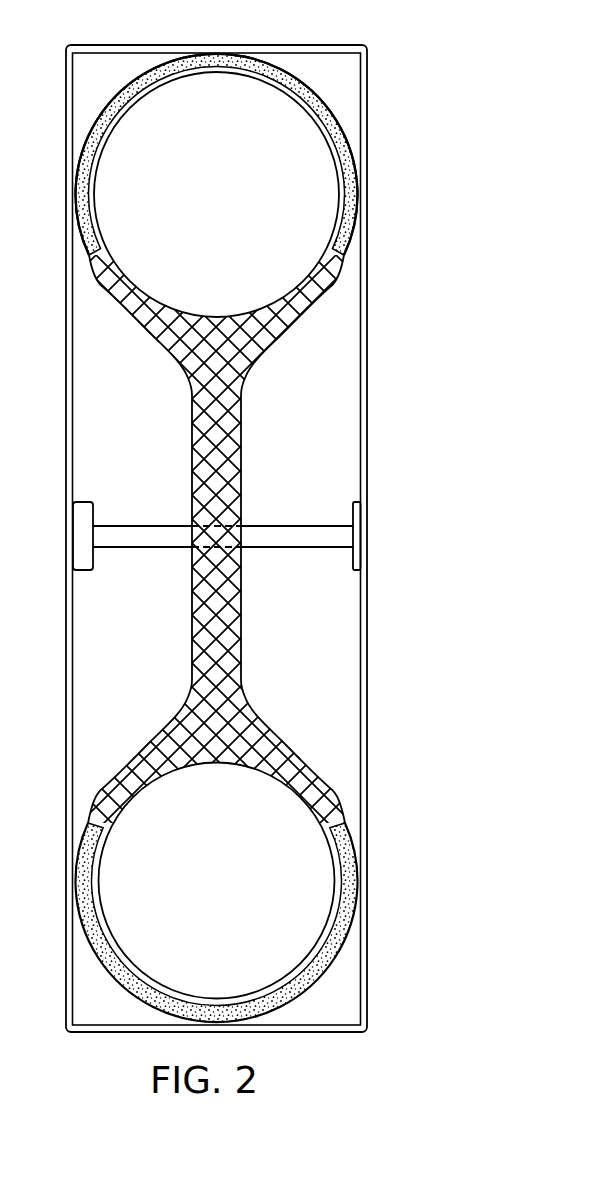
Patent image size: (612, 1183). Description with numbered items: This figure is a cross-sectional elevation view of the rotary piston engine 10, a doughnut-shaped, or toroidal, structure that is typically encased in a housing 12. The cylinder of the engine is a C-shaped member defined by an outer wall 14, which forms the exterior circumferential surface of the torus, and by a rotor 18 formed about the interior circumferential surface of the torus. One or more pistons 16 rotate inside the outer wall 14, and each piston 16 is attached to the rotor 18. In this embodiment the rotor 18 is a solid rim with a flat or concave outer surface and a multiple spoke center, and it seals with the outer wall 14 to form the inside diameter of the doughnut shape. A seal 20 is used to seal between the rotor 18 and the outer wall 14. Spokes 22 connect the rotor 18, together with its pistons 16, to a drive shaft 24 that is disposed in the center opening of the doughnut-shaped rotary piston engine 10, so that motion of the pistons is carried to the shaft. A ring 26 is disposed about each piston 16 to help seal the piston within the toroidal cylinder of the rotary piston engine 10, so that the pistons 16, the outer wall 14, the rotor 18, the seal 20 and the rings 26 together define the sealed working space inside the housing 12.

The rotary piston engine 10 is at (433, 183).
The housing 12 is at (369, 292).
The outer wall 14 is at (301, 84).
The piston 16 is at (228, 196).
The rotor 18 is at (320, 289).
The seal 20 is at (346, 252).
The spokes 22 is at (232, 430).
The drive shaft 24 is at (281, 536).
The ring 26 is at (340, 143).